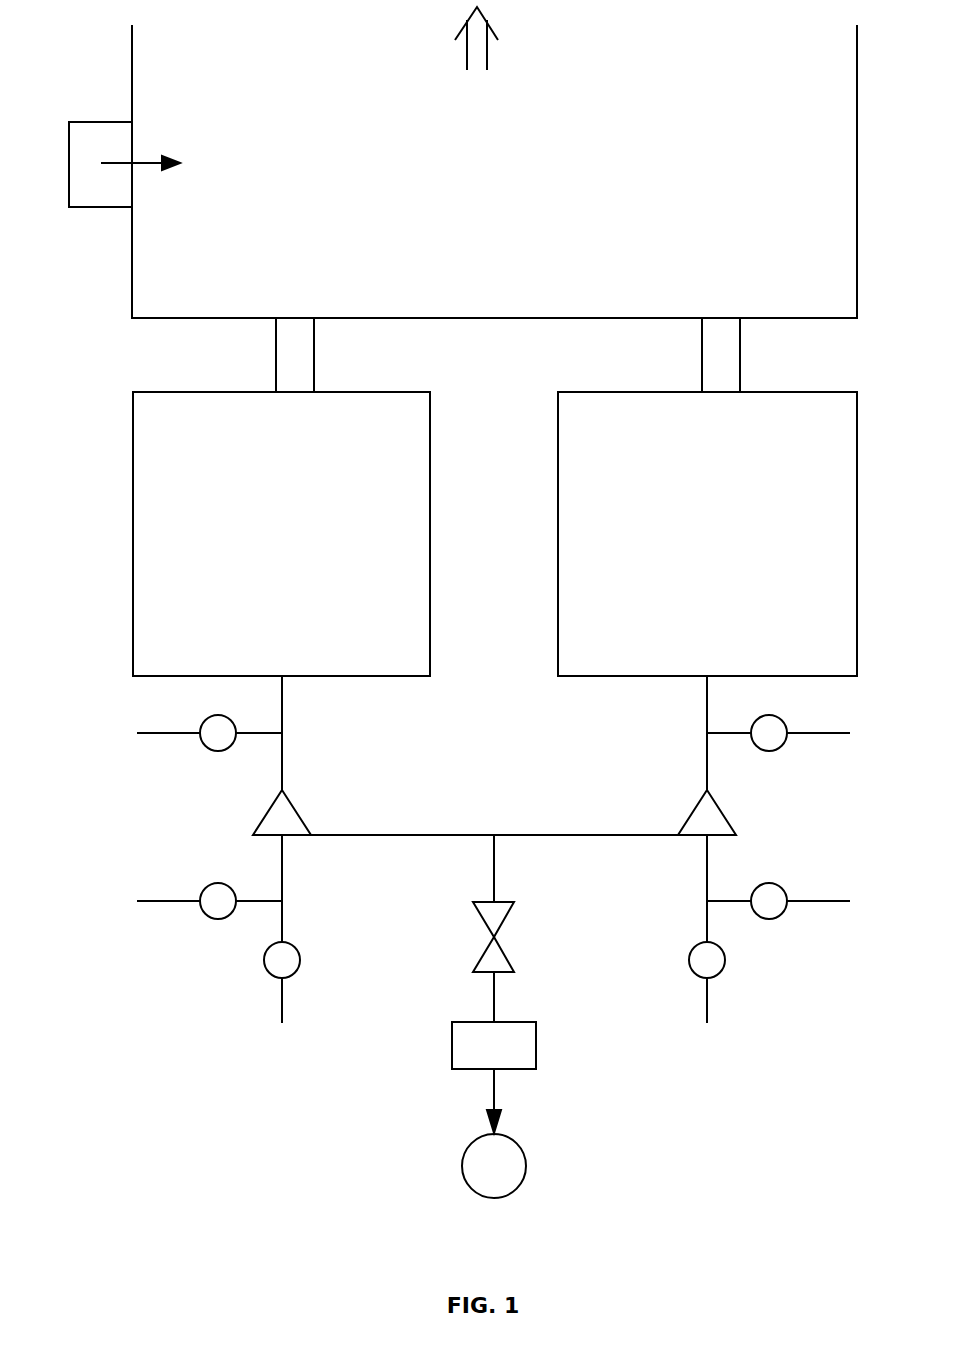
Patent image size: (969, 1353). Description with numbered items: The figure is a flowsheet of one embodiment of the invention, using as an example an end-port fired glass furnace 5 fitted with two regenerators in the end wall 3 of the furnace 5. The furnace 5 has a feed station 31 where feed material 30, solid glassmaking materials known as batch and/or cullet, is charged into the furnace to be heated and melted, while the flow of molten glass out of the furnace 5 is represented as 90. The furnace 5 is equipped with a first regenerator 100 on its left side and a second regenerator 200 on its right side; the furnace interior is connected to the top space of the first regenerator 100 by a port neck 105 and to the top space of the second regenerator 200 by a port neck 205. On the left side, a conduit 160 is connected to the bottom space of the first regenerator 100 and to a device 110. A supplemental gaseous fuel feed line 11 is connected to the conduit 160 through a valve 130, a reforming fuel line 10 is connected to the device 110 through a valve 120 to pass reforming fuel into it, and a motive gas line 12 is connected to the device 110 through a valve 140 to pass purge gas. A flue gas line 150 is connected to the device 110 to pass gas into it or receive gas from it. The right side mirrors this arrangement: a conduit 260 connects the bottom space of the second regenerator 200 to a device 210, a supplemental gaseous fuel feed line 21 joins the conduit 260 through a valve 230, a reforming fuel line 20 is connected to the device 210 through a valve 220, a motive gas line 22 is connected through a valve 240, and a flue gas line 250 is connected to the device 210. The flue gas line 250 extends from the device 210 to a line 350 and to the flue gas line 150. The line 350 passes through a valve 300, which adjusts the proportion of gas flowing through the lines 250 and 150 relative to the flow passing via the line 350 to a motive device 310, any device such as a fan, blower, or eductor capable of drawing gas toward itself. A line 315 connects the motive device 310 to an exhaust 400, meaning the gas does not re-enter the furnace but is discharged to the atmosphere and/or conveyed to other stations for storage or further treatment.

The end-port fired glass furnace 5 is at (494, 171).
The end wall 3 is at (534, 324).
The feed station 31 is at (82, 122).
The feed material 30 is at (140, 149).
The flow of molten glass 90 is at (493, 38).
The port neck 105 is at (316, 352).
The port neck 205 is at (742, 352).
The first regenerator 100 is at (263, 547).
The second regenerator 200 is at (689, 547).
The conduit 160 is at (285, 705).
The valve 130 is at (239, 719).
The supplemental gaseous fuel feed line 11 is at (152, 733).
The device 110 is at (285, 823).
The flue gas line 150 is at (373, 822).
The flue gas line 250 is at (615, 822).
The conduit 260 is at (705, 705).
The valve 230 is at (748, 719).
The supplemental gaseous fuel feed line 21 is at (836, 733).
The device 210 is at (704, 823).
The valve 140 is at (239, 887).
The motive gas line 12 is at (152, 901).
The valve 120 is at (258, 906).
The reforming fuel line 10 is at (282, 1017).
The valve 240 is at (748, 887).
The motive gas line 22 is at (836, 901).
The valve 220 is at (731, 906).
The reforming fuel line 20 is at (707, 1017).
The line 350 is at (497, 870).
The valve 300 is at (528, 937).
The motive device 310 is at (494, 1020).
The line 315 is at (497, 1093).
The exhaust 400 is at (494, 1166).